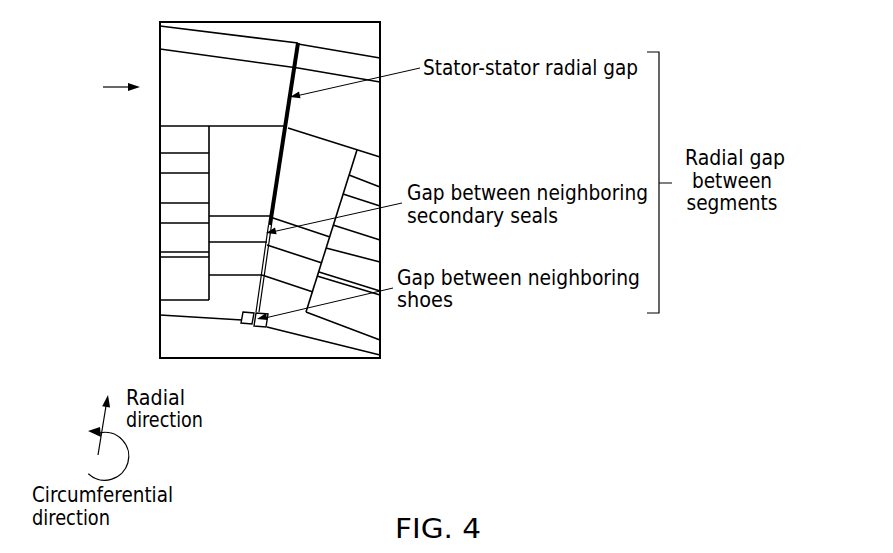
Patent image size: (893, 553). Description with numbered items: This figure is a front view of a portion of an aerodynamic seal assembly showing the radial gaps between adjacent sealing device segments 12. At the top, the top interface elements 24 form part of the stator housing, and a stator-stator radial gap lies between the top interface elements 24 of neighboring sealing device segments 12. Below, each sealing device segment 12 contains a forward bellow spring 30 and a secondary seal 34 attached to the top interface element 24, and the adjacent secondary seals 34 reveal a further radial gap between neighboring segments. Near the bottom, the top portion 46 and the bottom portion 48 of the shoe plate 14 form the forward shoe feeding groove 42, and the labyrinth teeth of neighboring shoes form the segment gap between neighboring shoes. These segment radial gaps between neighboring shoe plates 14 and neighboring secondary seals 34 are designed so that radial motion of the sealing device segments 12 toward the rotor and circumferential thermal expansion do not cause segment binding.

The sealing device segment 12 is at (203, 123).
The shoe plate 14 is at (116, 277).
The top interface element 24 is at (166, 36).
The forward bellow spring 30 is at (166, 163).
The secondary seal 34 is at (215, 260).
The forward shoe feeding groove 42 is at (247, 316).
The top portion 46 is at (217, 280).
The bottom portion 48 is at (204, 306).